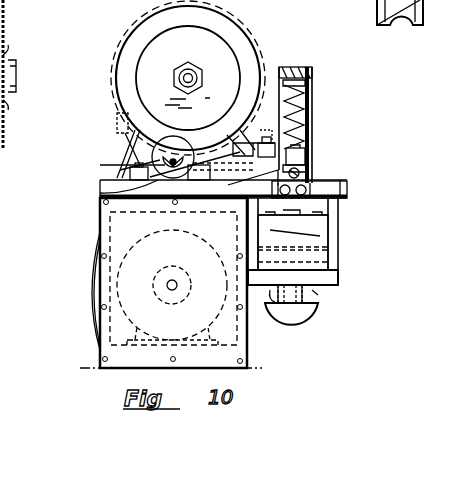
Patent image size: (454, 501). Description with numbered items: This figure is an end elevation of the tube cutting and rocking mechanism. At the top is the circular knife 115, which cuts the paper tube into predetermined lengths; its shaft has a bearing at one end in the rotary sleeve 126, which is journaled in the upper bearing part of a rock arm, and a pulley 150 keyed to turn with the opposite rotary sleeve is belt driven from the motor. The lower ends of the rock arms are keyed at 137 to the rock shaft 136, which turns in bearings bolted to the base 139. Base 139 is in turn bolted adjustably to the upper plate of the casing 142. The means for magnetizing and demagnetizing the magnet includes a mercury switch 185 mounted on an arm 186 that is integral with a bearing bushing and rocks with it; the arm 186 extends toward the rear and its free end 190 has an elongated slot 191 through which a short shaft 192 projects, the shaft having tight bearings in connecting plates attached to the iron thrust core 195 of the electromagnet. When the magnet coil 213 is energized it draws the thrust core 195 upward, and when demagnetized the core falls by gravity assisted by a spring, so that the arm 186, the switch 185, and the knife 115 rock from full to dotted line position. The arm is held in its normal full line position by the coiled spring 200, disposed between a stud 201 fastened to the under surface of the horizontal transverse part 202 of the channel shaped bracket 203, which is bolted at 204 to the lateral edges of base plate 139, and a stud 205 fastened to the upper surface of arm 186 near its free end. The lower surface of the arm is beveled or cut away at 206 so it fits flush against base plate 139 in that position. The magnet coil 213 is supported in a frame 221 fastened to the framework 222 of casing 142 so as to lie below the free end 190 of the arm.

The circular knife 115 is at (140, 36).
The sleeve 126 is at (175, 72).
The rock shaft 136 is at (150, 154).
The key 137 is at (100, 192).
The base 139 is at (100, 183).
The casing 142 is at (125, 230).
The pulley 150 is at (385, 4).
The coiled spring 200 is at (292, 96).
The stud 201 is at (312, 77).
The horizontal transverse part 202 is at (306, 68).
The channel shaped bracket 203 is at (268, 145).
The mercury switch 185 is at (310, 130).
The stud 205 is at (300, 158).
The free end 190 is at (299, 172).
The elongated slot 191 is at (276, 173).
The short shaft 192 is at (347, 185).
The bolts 204 is at (347, 192).
The arm 186 is at (268, 183).
The framework 222 is at (338, 206).
The beveled portion 206 is at (285, 217).
The magnet coil 213 is at (324, 233).
The frame 221 is at (340, 268).
The thrust core 195 is at (315, 307).